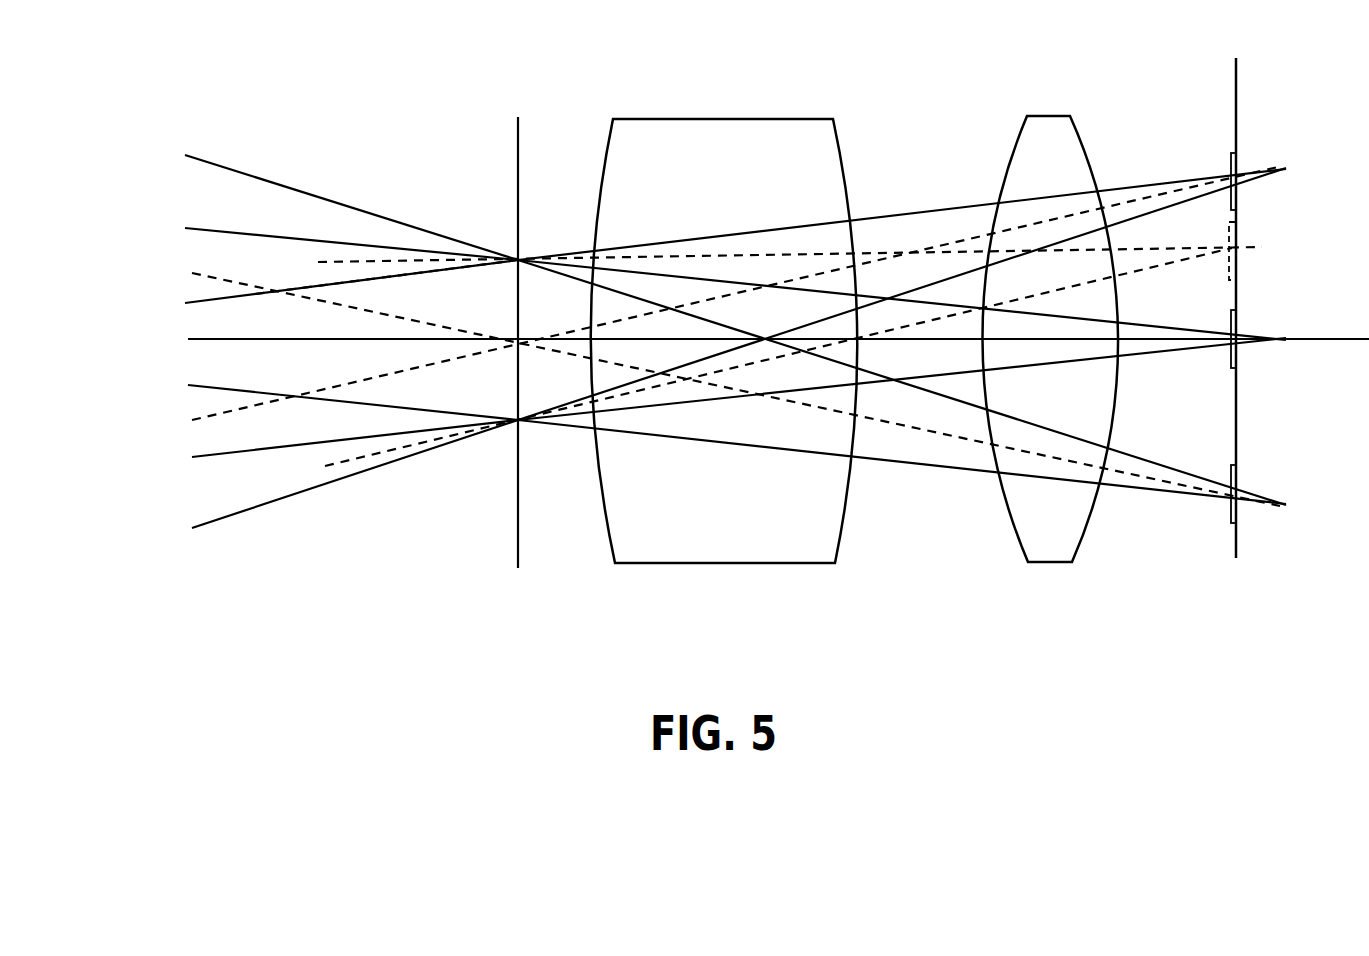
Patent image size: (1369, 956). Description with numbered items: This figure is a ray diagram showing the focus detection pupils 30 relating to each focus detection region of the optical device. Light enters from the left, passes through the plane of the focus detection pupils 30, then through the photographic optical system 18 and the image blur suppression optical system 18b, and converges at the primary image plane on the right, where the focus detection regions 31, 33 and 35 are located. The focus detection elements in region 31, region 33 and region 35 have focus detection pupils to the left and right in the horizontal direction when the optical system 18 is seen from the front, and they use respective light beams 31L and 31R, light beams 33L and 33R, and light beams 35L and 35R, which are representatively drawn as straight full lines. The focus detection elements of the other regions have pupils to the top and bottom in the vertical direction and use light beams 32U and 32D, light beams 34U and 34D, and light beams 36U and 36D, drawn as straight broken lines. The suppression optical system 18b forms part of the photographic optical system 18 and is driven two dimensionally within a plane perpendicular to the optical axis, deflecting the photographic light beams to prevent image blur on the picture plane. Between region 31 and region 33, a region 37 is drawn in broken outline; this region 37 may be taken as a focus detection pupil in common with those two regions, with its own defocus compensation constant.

The photographic optical system 18 is at (720, 565).
The image blur suppression optical system 18b is at (1010, 522).
The focus detection pupils 30 is at (518, 178).
The focus detection region 31 is at (1237, 165).
The light beam 31R is at (1140, 182).
The light beam 31L is at (1167, 209).
The focus detection region 33 is at (1237, 320).
The light beam 33R is at (1127, 321).
The light beam 33L is at (1137, 354).
The focus detection region 35 is at (1237, 477).
The light beam 35R is at (1127, 459).
The light beam 35L is at (1123, 490).
The region 37 is at (1242, 232).
The light beam 32U is at (222, 412).
The light beam 32D is at (249, 407).
The light beam 34U is at (262, 339).
The light beam 34D is at (252, 339).
The light beam 36U is at (252, 273).
The light beam 36D is at (205, 292).